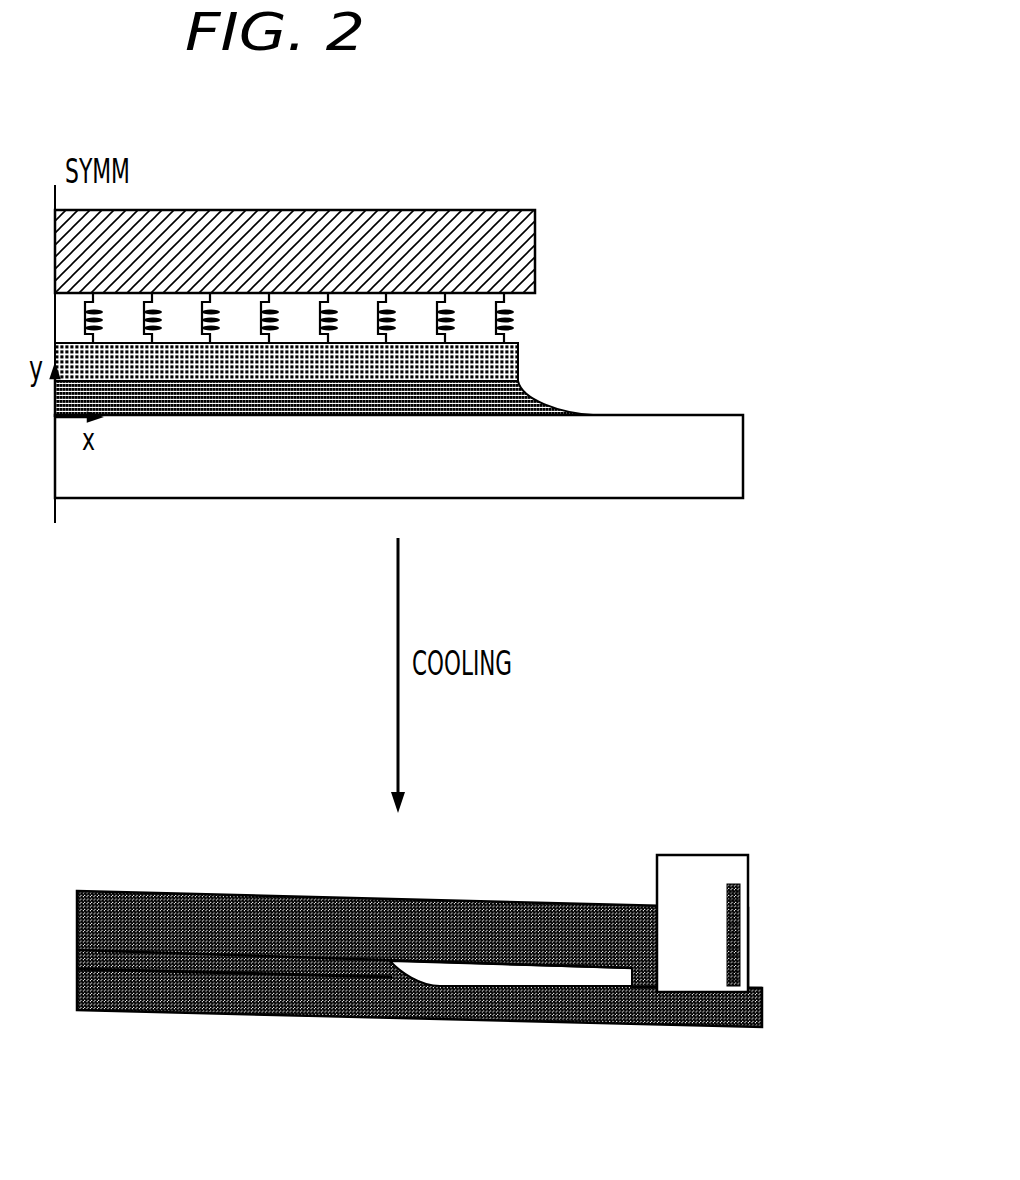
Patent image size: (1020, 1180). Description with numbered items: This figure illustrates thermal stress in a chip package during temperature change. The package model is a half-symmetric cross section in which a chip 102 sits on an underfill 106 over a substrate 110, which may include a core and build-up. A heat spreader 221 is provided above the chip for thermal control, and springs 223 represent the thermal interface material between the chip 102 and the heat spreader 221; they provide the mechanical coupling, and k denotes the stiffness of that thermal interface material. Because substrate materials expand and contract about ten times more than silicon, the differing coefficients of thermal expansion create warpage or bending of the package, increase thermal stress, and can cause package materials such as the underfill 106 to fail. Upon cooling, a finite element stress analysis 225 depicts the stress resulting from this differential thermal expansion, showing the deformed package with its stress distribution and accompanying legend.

The heat spreader 221 is at (430, 210).
The springs 223 is at (514, 318).
The chip 102 is at (493, 360).
The underfill 106 is at (580, 410).
The substrate 110 is at (727, 459).
The finite element stress analysis 225 is at (792, 862).